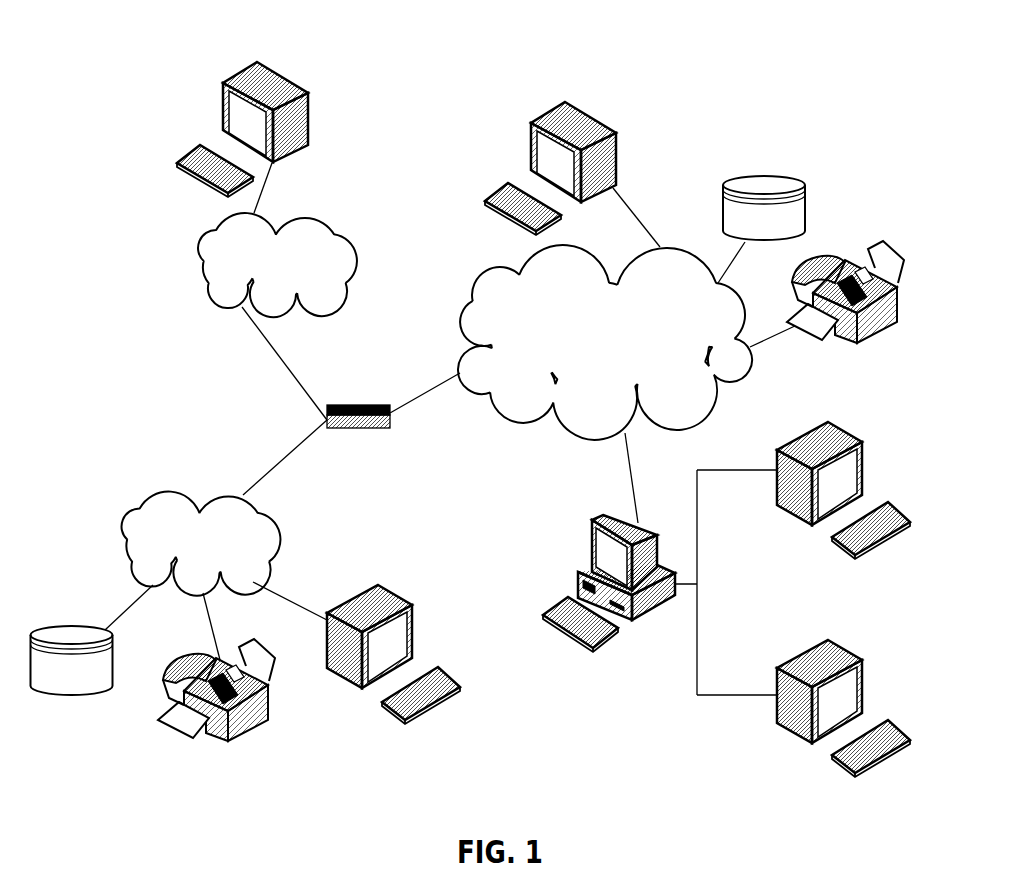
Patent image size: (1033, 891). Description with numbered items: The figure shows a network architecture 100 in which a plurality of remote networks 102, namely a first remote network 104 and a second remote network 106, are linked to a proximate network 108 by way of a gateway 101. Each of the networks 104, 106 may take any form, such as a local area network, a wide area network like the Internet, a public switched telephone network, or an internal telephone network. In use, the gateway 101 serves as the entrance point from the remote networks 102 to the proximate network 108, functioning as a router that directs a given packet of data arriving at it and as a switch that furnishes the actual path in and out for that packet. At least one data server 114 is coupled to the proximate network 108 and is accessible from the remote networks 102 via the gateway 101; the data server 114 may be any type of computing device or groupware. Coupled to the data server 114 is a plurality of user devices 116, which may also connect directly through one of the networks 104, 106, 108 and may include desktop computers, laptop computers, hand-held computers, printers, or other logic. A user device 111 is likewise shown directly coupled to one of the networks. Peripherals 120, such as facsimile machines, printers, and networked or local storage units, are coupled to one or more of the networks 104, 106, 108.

The architecture 100 is at (148, 41).
The gateway 101 is at (342, 405).
The remote networks 102 is at (180, 330).
The first remote network 104 is at (130, 517).
The second remote network 106 is at (348, 235).
The proximate network 108 is at (710, 407).
The user device 111 is at (618, 133).
The data server 114 is at (592, 535).
The user devices 116 is at (310, 100).
The peripheral 120 is at (805, 185).